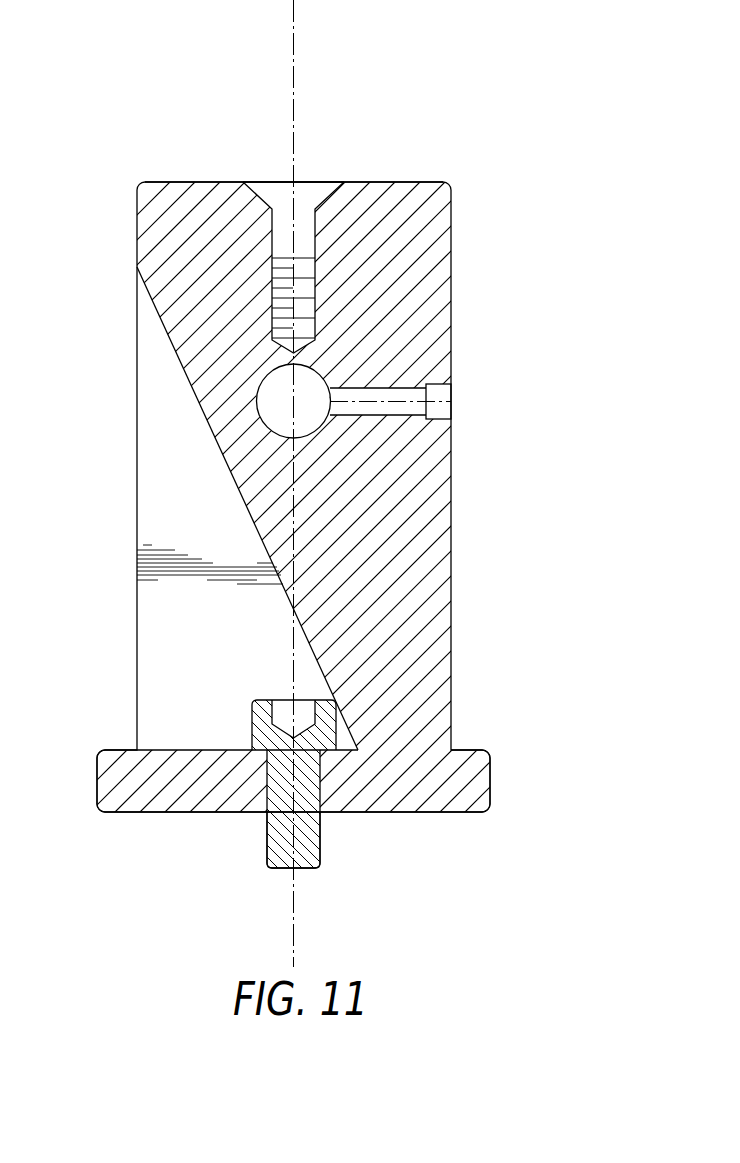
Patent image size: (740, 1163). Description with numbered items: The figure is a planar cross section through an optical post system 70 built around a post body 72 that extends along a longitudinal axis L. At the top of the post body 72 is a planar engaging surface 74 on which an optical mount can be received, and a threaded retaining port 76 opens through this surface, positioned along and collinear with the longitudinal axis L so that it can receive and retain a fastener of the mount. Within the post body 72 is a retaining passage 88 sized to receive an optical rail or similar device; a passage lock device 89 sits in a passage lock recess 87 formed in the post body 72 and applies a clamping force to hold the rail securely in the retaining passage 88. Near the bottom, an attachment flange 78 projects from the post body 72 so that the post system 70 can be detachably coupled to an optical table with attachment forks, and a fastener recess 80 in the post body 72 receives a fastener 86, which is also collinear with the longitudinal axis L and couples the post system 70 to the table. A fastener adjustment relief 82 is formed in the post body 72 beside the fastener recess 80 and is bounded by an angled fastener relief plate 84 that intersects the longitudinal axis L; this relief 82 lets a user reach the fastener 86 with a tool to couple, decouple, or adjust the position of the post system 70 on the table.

The post system 70 is at (512, 207).
The post body 72 is at (430, 533).
The engaging surface 74 is at (227, 182).
The retaining port 76 is at (315, 189).
The attachment flange 78 is at (97, 784).
The fastener recess 80 is at (328, 813).
The fastener adjustment relief 82 is at (195, 609).
The angled fastener relief plate 84 is at (250, 512).
The fastener 86 is at (307, 853).
The passage lock recess 87 is at (354, 388).
The retaining passage 88 is at (277, 402).
The passage lock device 89 is at (440, 405).
The longitudinal axis L is at (294, 95).